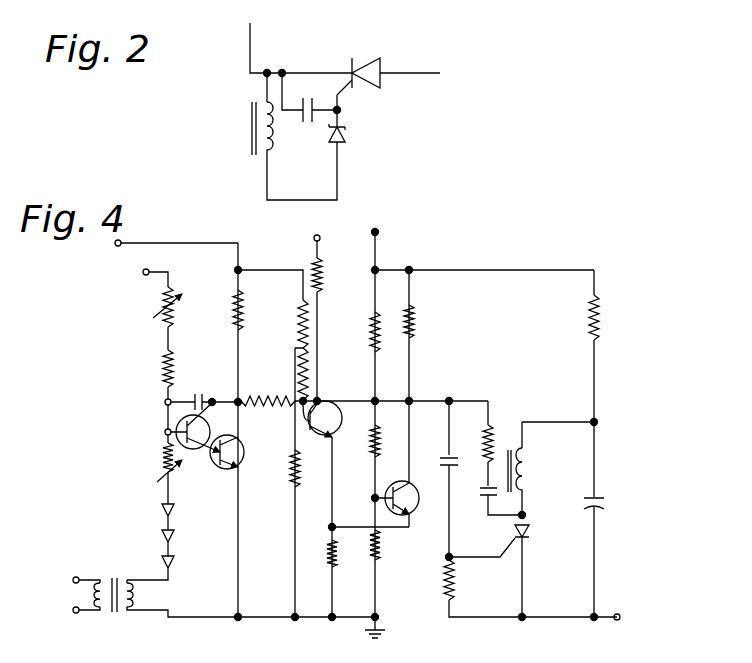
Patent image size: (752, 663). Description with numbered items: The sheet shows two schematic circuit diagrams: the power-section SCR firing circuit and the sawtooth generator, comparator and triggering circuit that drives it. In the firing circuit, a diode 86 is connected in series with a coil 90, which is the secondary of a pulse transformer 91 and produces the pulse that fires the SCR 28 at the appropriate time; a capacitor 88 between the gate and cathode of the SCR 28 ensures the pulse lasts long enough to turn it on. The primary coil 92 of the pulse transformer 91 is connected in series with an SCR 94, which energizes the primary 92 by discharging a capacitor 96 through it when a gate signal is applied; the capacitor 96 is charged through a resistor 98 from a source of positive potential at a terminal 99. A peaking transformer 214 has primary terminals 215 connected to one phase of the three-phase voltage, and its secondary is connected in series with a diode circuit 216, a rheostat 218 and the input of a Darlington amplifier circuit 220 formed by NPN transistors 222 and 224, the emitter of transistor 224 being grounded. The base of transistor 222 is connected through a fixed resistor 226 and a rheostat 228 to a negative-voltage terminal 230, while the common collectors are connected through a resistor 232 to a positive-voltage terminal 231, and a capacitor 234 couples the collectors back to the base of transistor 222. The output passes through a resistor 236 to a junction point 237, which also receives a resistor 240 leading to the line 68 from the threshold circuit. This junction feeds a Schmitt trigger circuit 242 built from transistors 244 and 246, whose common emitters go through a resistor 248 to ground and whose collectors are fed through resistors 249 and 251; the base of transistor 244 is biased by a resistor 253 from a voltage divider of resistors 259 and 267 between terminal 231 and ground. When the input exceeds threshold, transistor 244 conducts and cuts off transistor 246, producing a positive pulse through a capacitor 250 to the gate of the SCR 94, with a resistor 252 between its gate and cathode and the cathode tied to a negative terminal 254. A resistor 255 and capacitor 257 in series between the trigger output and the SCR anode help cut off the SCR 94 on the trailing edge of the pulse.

In FIG. 2, the SCR 28 is at (360, 60).
In FIG. 2, the diode 86 is at (338, 144).
In FIG. 2, the capacitor 88 is at (311, 97).
In FIG. 2, the coil 90 is at (272, 136).
In FIG. 2, the pulse transformer 91 is at (258, 151).
In FIG. 4, the pulse transformer 91 is at (528, 463).
In FIG. 4, the line 68 is at (315, 237).
In FIG. 4, the primary coil 92 is at (526, 479).
In FIG. 4, the SCR 94 is at (530, 535).
In FIG. 4, the capacitor 96 is at (599, 500).
In FIG. 4, the resistor 98 is at (598, 312).
In FIG. 4, the terminal 99 is at (378, 232).
In FIG. 4, the peaking transformer 214 is at (118, 562).
In FIG. 4, the primary terminals 215 is at (73, 605).
In FIG. 4, the diode circuit 216 is at (158, 498).
In FIG. 4, the rheostat 218 is at (160, 464).
In FIG. 4, the Darlington amplifier circuit 220 is at (220, 492).
In FIG. 4, the transistor 222 is at (166, 432).
In FIG. 4, the transistor 224 is at (244, 452).
In FIG. 4, the fixed resistor 226 is at (166, 372).
In FIG. 4, the rheostat 228 is at (156, 308).
In FIG. 4, the terminal 230 is at (143, 272).
In FIG. 4, the terminal 231 is at (115, 243).
In FIG. 4, the resistor 232 is at (236, 312).
In FIG. 4, the capacitor 234 is at (222, 382).
In FIG. 4, the resistor 236 is at (278, 377).
In FIG. 4, the junction point 237 is at (310, 468).
In FIG. 4, the resistor 240 is at (342, 262).
In FIG. 4, the Schmitt trigger circuit 242 is at (368, 501).
In FIG. 4, the transistor 244 is at (322, 409).
In FIG. 4, the transistor 246 is at (413, 481).
In FIG. 4, the resistor 248 is at (330, 566).
In FIG. 4, the resistor 249 is at (372, 312).
In FIG. 4, the capacitor 250 is at (452, 462).
In FIG. 4, the resistor 251 is at (412, 320).
In FIG. 4, the resistor 252 is at (447, 585).
In FIG. 4, the resistor 253 is at (305, 368).
In FIG. 4, the terminal 254 is at (620, 615).
In FIG. 4, the resistor 255 is at (492, 430).
In FIG. 4, the capacitor 257 is at (486, 497).
In FIG. 4, the resistor 259 is at (300, 311).
In FIG. 4, the resistor 267 is at (292, 482).